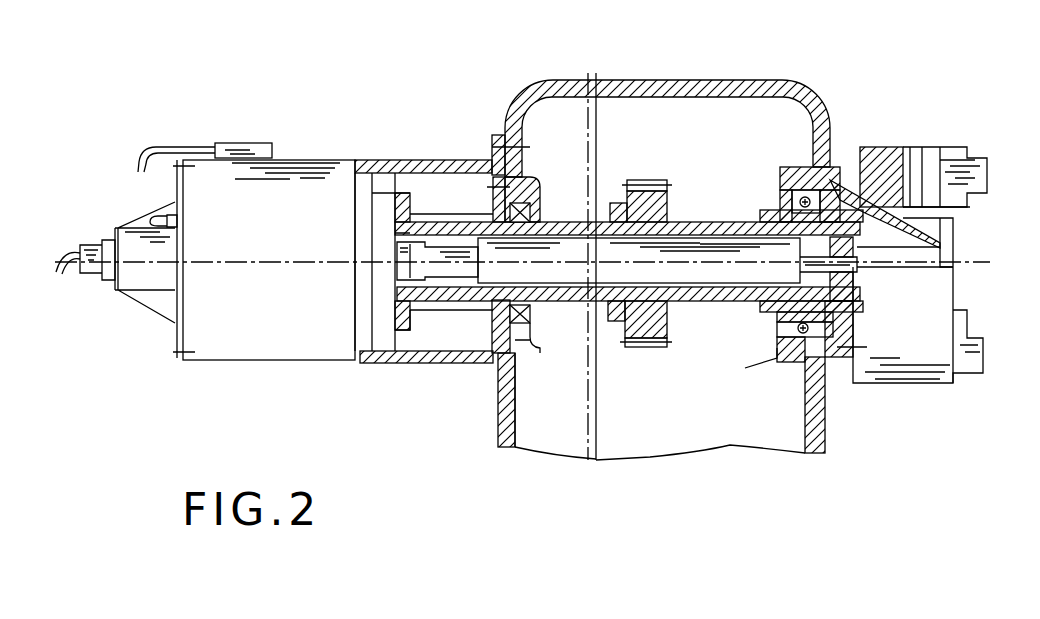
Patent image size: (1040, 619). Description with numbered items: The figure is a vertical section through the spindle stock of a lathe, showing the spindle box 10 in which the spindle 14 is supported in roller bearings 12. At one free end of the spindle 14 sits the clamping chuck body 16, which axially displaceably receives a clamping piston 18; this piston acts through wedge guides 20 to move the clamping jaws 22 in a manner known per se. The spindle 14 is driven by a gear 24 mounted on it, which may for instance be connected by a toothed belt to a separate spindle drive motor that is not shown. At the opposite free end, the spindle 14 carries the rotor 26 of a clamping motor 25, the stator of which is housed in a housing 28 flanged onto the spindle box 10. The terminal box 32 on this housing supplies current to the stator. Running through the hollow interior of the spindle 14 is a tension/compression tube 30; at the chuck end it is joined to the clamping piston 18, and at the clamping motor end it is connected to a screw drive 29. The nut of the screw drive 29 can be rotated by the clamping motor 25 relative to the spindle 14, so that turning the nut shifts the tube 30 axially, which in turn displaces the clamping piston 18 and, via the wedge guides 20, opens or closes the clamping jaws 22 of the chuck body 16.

The spindle box 10 is at (730, 85).
The roller bearings 12 is at (538, 338).
The spindle 14 is at (695, 298).
The clamping chuck body 16 is at (873, 357).
The clamping piston 18 is at (897, 242).
The wedge guides 20 is at (940, 235).
The clamping jaws 22 is at (970, 170).
The gear 24 is at (645, 345).
The clamping motor 25 is at (398, 340).
The rotor 26 is at (382, 203).
The housing 28 is at (425, 167).
The screw drive 29 is at (425, 238).
The tension/compression tube 30 is at (698, 230).
The terminal box 32 is at (243, 148).